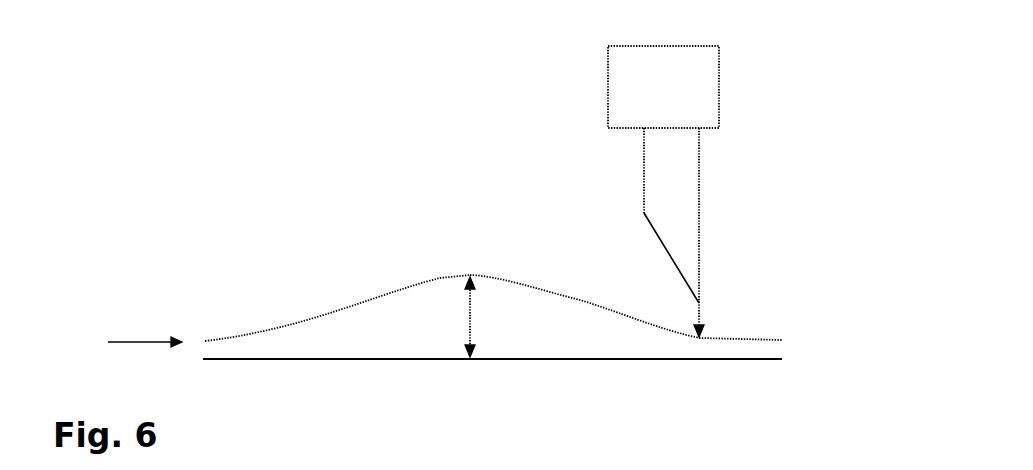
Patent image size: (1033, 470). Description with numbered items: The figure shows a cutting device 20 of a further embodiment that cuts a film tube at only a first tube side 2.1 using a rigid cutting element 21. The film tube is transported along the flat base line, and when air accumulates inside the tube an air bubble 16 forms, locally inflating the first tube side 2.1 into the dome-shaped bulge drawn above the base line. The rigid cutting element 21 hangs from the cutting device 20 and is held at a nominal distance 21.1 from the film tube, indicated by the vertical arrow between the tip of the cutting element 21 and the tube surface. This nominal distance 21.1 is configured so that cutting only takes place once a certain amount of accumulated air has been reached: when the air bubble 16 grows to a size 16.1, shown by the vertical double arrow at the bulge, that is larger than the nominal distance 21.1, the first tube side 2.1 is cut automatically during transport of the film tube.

The first tube side 2.1 is at (253, 335).
The air bubble 16 is at (442, 297).
The size of the air bubble 16.1 is at (472, 337).
The cutting device 20 is at (748, 112).
The rigid cutting element 21 is at (683, 181).
The nominal distance 21.1 is at (700, 328).